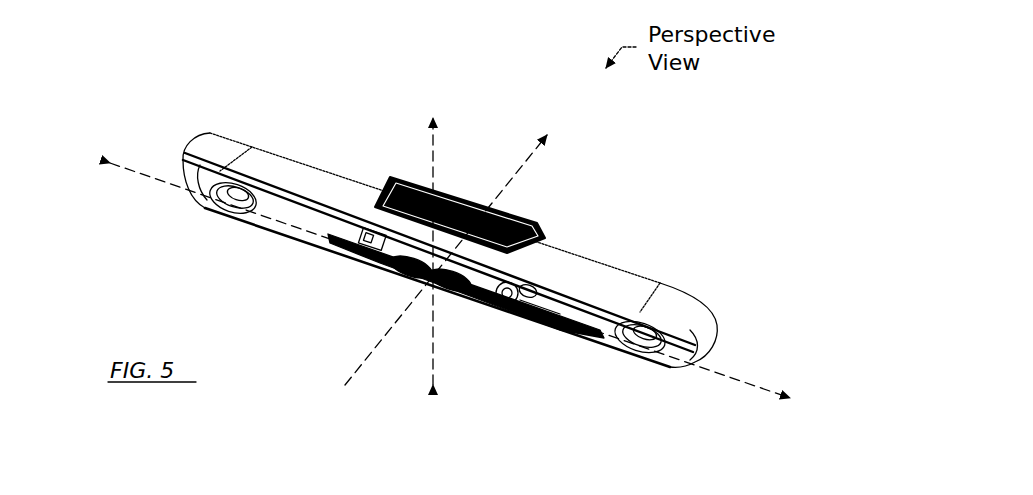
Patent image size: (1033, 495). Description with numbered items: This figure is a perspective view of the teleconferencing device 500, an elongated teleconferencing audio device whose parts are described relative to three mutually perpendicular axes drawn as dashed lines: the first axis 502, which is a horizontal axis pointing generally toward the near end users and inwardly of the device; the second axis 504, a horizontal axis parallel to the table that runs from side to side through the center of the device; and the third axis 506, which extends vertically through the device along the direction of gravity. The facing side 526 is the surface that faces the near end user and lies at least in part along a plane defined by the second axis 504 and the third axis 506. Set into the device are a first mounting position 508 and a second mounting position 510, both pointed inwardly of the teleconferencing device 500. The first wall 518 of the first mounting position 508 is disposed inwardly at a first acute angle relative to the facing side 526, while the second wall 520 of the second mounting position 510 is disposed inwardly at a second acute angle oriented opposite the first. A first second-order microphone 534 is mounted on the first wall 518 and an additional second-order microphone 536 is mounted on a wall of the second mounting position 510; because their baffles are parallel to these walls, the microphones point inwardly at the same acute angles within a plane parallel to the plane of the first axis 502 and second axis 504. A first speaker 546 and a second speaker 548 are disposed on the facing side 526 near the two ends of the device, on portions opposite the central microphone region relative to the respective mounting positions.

The teleconferencing device 500 is at (255, 130).
The first axis 502 is at (527, 152).
The second axis 504 is at (748, 380).
The third axis 506 is at (429, 142).
The first mounting position 508 is at (316, 222).
The second mounting position 510 is at (544, 294).
The first wall 518 is at (373, 233).
The second wall 520 is at (518, 275).
The facing side 526 is at (203, 188).
The first second-order microphone 534 is at (371, 260).
The additional second-order microphone 536 is at (506, 300).
The first speaker 546 is at (237, 217).
The second speaker 548 is at (631, 354).